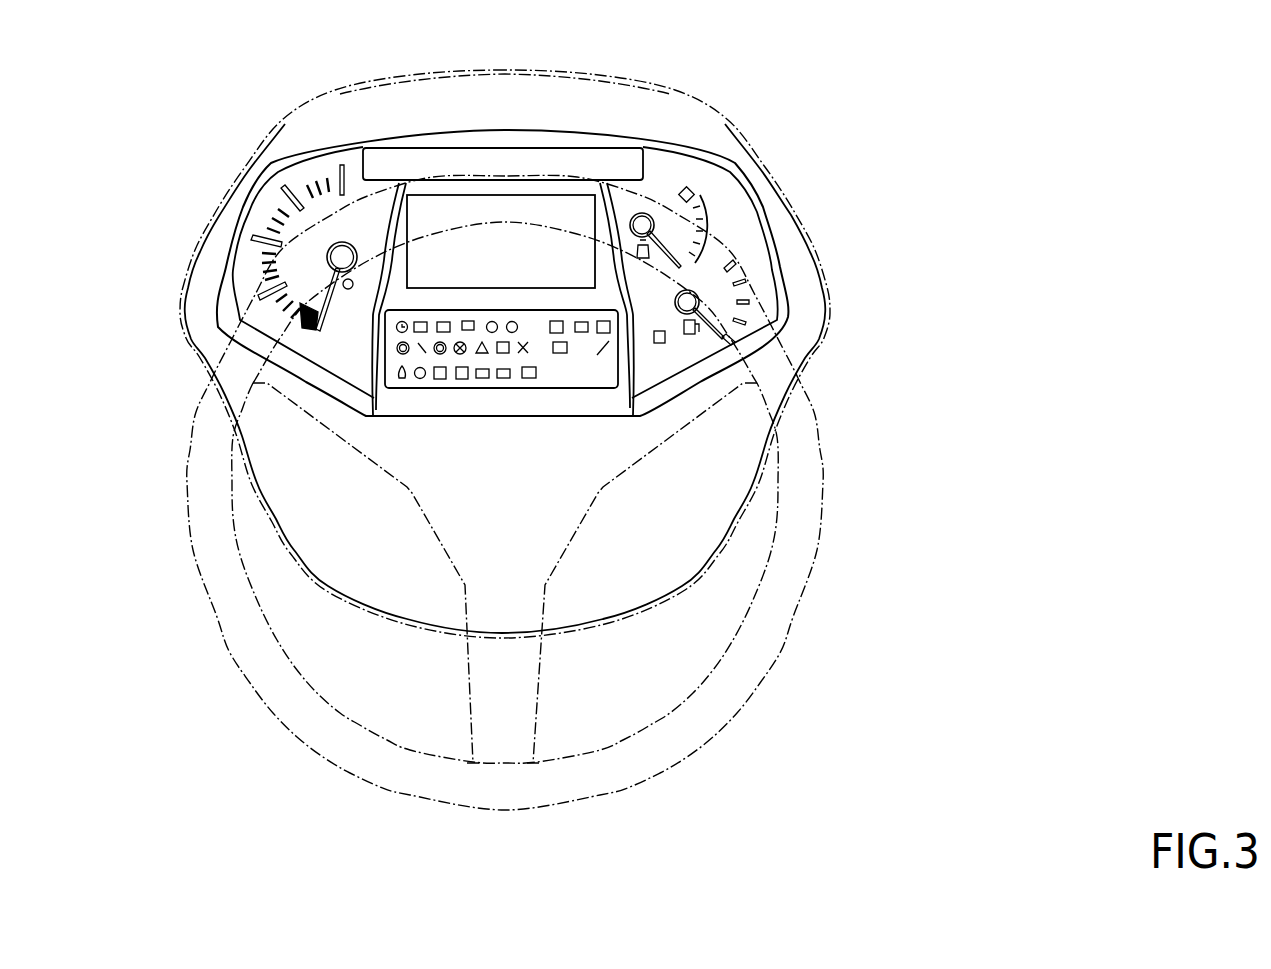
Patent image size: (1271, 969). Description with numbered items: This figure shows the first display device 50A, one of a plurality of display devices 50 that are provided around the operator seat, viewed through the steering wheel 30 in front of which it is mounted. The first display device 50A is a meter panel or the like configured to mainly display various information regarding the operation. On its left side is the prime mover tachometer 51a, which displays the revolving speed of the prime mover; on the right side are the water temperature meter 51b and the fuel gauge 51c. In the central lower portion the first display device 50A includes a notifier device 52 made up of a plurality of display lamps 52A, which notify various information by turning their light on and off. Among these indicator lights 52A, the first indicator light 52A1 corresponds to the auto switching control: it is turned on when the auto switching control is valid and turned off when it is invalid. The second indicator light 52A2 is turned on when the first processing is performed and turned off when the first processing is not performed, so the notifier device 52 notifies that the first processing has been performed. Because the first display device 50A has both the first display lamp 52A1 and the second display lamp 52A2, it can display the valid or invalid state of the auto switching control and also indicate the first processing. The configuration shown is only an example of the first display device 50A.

The steering wheel 30 is at (813, 566).
The display device 50 is at (566, 378).
The first display device 50A is at (762, 203).
The prime mover tachometer 51a is at (367, 192).
The water temperature meter 51b is at (686, 173).
The fuel gauge 51c is at (753, 284).
The notifier device 52 is at (636, 432).
The display lamp 52A is at (533, 438).
The first indicator light 52A1 is at (518, 328).
The second indicator light 52A2 is at (497, 330).